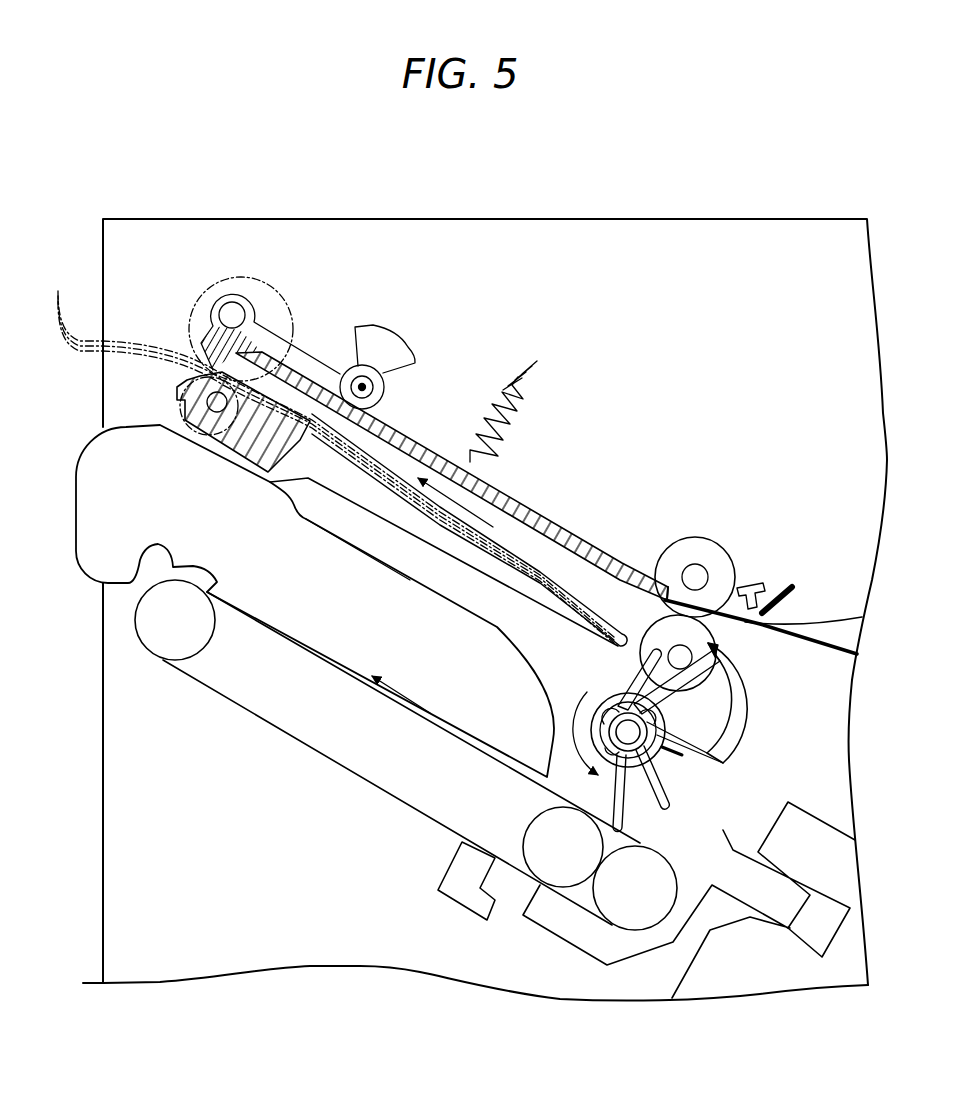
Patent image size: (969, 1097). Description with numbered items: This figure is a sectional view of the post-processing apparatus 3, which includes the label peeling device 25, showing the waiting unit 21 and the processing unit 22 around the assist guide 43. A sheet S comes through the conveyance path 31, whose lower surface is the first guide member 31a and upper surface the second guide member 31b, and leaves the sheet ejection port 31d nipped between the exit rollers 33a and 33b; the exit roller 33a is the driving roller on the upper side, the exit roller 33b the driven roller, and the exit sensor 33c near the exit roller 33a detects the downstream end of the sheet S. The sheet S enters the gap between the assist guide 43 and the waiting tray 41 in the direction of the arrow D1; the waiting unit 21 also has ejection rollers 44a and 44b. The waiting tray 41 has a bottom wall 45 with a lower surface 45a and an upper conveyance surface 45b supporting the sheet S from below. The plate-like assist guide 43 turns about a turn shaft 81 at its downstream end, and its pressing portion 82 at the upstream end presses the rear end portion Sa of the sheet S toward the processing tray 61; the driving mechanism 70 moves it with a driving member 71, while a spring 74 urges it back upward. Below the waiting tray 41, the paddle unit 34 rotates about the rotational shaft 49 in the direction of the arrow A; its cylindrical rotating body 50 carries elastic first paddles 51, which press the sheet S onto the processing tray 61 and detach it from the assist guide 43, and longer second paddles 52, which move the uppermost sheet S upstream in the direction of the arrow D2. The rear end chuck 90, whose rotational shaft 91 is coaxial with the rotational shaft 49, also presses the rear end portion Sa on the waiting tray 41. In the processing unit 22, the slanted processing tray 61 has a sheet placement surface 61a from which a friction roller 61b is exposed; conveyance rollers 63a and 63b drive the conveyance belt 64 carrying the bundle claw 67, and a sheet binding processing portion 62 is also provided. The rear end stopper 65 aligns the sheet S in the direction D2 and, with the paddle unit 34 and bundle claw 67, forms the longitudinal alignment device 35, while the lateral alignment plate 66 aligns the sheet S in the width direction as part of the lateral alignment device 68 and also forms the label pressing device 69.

The post-processing apparatus 3 is at (674, 197).
The waiting unit 21 is at (434, 416).
The processing unit 22 is at (433, 821).
The label peeling device 25 is at (286, 601).
The conveyance path 31 is at (784, 608).
The first guide member 31a is at (833, 650).
The second guide member 31b is at (836, 617).
The sheet ejection port 31d is at (676, 612).
The exit roller 33a is at (719, 556).
The exit roller 33b is at (703, 688).
The exit sensor 33c is at (752, 585).
The paddle unit 34 is at (540, 873).
The longitudinal alignment device 35 is at (605, 773).
The waiting tray 41 is at (360, 510).
The assist guide 43 is at (420, 438).
The ejection roller 44a is at (240, 279).
The ejection roller 44b is at (178, 408).
The bottom wall 45 is at (448, 544).
The lower surface 45a is at (437, 553).
The upper surface 45b is at (484, 528).
The rotational shaft 49 is at (697, 746).
The rotating body 50 is at (652, 757).
The first paddle 51 is at (690, 708).
The second paddle 52 is at (670, 702).
The processing tray 61 is at (404, 717).
The sheet placement surface 61a is at (286, 628).
The friction roller 61b is at (540, 815).
The sheet binding processing portion 62 is at (822, 826).
The conveyance roller 63a is at (160, 640).
The conveyance roller 63b is at (667, 903).
The conveyance belt 64 is at (367, 780).
The rear end stopper 65 is at (787, 917).
The lateral alignment plate 66 is at (290, 601).
The bundle claw 67 is at (458, 895).
The lateral alignment device 68 is at (290, 601).
The label pressing device 69 is at (93, 565).
The driving mechanism 70 is at (435, 352).
The driving member 71 is at (388, 340).
The spring 74 is at (527, 425).
The turn shaft 81 is at (236, 316).
The pressing portion 82 is at (642, 590).
The rear end chuck 90 is at (750, 699).
The rotational shaft 91 is at (640, 734).
The sheet S is at (329, 460).
The rear end portion Sa is at (588, 620).
The arrow D1 is at (493, 527).
The arrow D2 is at (392, 692).
The arrow A is at (572, 723).